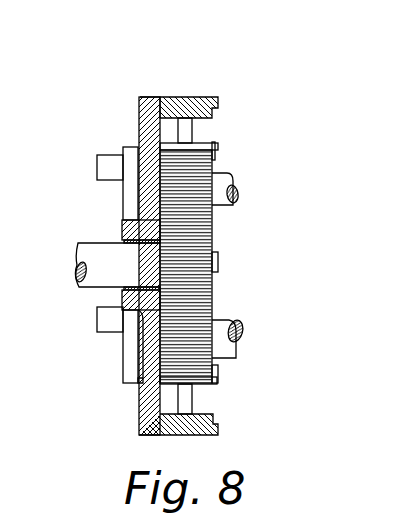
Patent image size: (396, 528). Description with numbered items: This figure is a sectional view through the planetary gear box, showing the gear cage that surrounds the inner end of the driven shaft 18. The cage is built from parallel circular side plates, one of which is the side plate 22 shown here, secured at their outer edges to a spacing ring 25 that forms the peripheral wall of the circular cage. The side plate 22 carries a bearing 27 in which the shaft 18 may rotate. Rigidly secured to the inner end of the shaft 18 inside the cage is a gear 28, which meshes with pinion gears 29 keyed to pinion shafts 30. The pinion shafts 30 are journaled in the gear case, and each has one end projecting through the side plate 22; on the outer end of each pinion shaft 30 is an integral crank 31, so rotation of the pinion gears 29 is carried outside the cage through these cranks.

The shaft 18 is at (92, 288).
The side plate 22 is at (139, 118).
The spacing ring 25 is at (198, 97).
The bearing 27 is at (122, 242).
The gear 28 is at (212, 233).
The pinion gears 29 is at (198, 176).
The pinion shafts 30 is at (236, 184).
The crank 31 is at (98, 170).